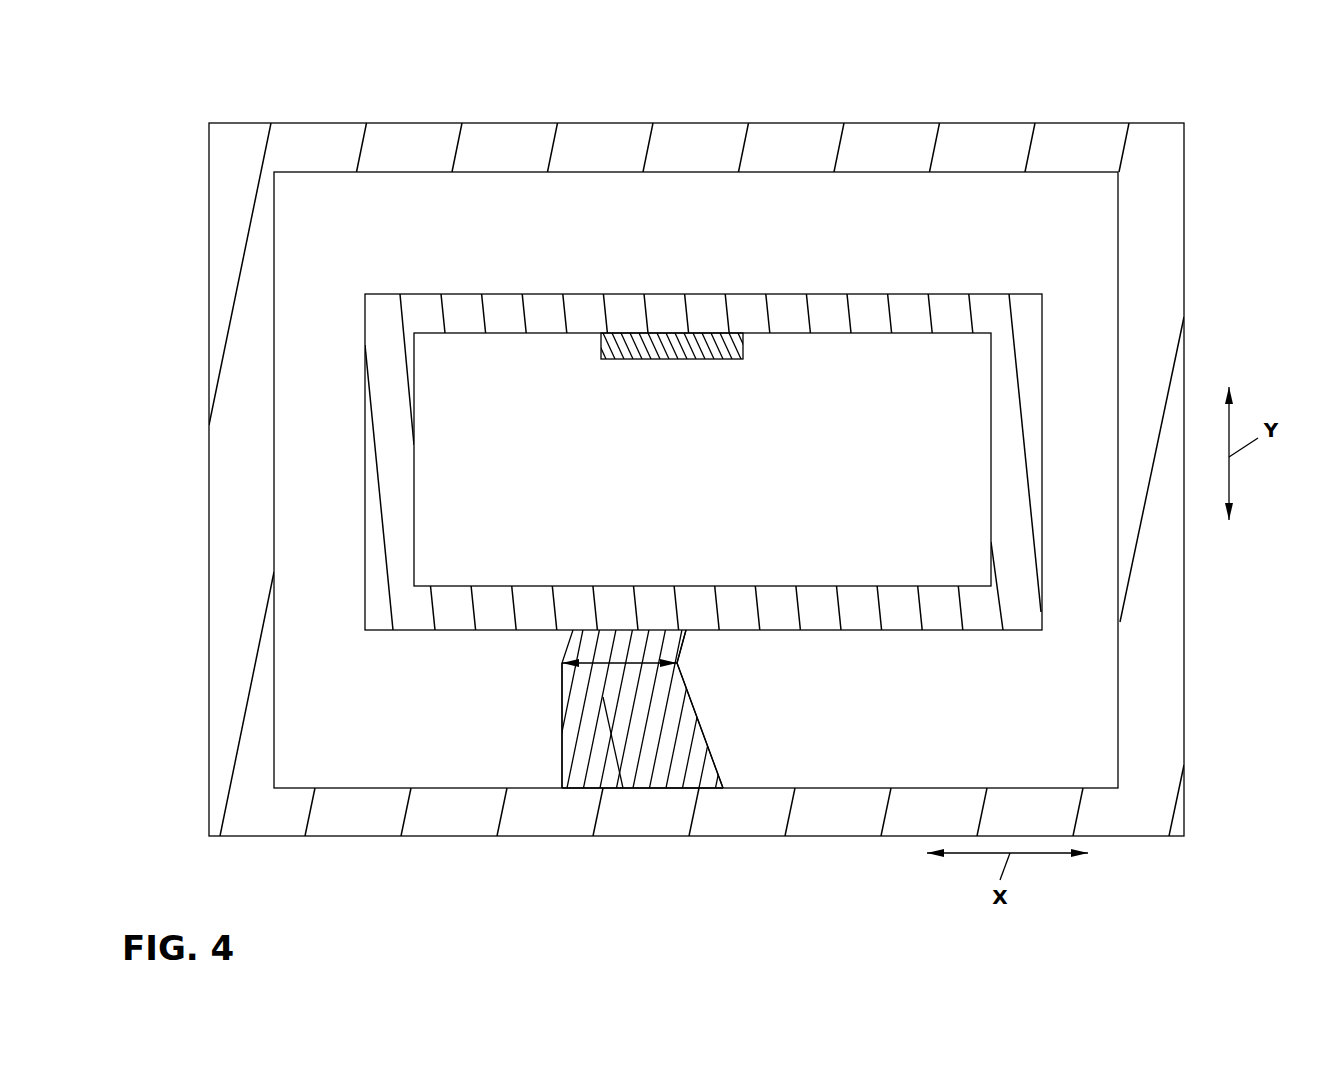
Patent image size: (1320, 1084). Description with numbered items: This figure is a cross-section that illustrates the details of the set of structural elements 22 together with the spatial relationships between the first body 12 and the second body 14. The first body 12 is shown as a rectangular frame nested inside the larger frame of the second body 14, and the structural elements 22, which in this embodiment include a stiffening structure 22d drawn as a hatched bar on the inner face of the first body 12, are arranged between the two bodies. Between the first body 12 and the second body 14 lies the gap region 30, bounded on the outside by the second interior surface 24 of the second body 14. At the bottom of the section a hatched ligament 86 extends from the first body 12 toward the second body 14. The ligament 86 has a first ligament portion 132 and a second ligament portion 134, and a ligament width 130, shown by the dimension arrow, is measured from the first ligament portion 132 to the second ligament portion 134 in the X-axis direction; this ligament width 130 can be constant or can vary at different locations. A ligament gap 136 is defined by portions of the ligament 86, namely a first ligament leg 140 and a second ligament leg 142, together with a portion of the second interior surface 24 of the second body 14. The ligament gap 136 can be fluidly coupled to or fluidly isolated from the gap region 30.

The first body 12 is at (507, 292).
The second body 14 is at (397, 120).
The structural element 22 is at (717, 367).
The stiffening structure 22d is at (702, 331).
The second interior surface 24 is at (1030, 788).
The gap region 30 is at (966, 696).
The ligament 86 is at (699, 712).
The ligament width 130 is at (655, 664).
The first ligament portion 132 is at (563, 663).
The second ligament portion 134 is at (680, 670).
The ligament gap 136 is at (612, 753).
The first ligament leg 140 is at (560, 745).
The second ligament leg 142 is at (681, 788).